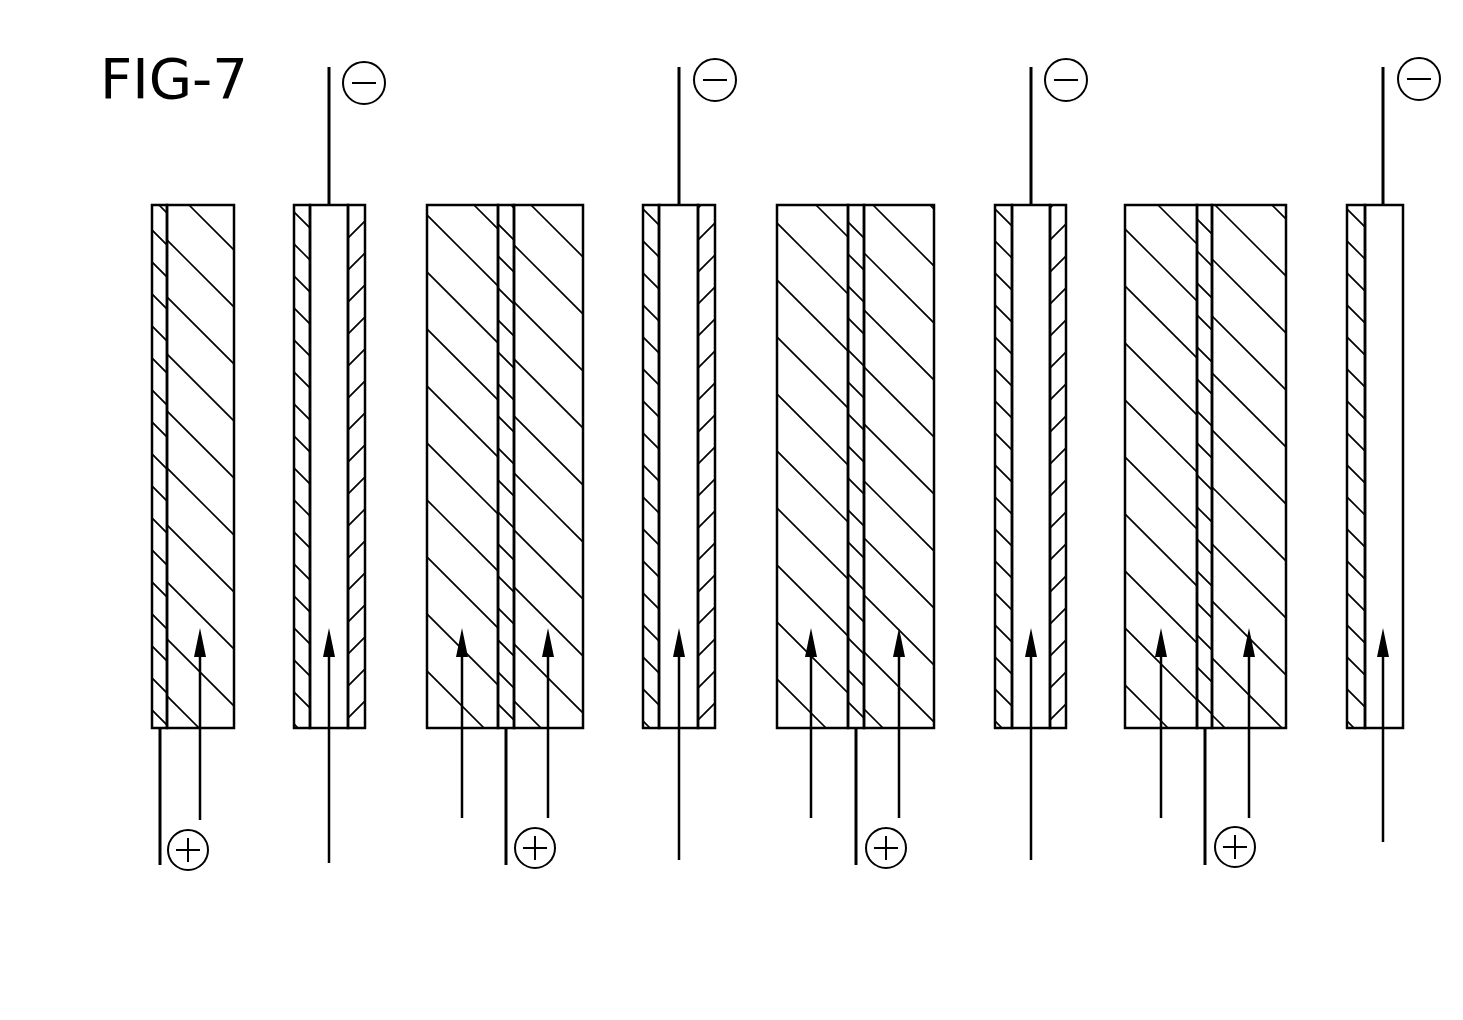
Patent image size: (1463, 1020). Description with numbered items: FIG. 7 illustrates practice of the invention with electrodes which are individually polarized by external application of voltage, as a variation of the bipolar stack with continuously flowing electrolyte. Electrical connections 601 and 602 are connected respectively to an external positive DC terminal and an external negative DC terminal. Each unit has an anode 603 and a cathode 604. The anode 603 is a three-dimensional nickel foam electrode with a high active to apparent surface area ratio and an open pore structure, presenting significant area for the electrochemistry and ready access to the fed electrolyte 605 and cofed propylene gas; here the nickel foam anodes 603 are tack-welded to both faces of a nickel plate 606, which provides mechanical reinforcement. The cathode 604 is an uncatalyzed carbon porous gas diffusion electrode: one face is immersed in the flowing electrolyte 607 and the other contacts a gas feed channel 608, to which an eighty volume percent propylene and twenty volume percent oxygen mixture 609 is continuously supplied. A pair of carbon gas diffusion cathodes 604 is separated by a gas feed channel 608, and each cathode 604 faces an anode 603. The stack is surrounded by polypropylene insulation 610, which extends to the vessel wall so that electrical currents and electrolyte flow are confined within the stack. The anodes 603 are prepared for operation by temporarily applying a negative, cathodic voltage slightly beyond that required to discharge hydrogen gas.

The electrical connection 601 is at (160, 783).
The electrical connection 602 is at (329, 118).
The anode 603 is at (197, 507).
The cathode 604 is at (300, 205).
The fed electrolyte 605 is at (200, 783).
The nickel plate 606 is at (160, 205).
The flowing electrolyte 607 is at (258, 692).
The gas feed channel 608 is at (323, 393).
The propylene/oxygen gas 609 is at (329, 830).
The polypropylene insulation 610 is at (130, 667).